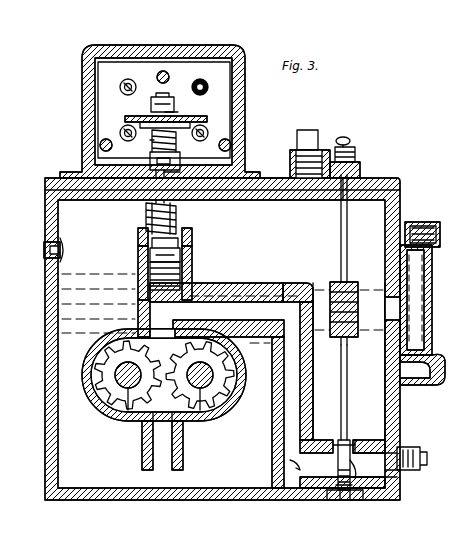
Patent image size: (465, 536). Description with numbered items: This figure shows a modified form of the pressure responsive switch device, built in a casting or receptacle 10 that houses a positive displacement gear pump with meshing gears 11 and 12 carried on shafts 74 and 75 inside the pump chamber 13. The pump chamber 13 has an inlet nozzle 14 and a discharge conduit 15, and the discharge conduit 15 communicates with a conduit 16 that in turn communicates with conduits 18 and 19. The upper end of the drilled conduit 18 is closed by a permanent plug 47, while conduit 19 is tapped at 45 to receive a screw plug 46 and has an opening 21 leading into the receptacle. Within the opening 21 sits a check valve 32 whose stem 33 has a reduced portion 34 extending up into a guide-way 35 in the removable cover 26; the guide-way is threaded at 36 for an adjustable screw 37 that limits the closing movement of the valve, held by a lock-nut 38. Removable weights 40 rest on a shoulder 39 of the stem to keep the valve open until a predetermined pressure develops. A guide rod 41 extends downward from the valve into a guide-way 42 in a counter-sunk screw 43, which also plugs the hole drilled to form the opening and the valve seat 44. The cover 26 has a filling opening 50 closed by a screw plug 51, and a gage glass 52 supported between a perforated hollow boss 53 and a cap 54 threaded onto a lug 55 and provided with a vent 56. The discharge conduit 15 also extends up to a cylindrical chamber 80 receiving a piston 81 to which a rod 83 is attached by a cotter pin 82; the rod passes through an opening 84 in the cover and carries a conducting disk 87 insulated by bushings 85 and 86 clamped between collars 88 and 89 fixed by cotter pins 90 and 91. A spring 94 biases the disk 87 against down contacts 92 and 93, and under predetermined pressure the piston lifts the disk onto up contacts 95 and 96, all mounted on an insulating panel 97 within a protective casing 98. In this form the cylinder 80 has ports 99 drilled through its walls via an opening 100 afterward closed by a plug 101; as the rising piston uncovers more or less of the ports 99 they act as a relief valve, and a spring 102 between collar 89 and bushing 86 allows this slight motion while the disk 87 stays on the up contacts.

The receptacle 10 is at (45, 400).
The pump gear 11 is at (236, 410).
The pump gear 12 is at (100, 400).
The pump chamber 13 is at (222, 425).
The inlet nozzle 14 is at (166, 470).
The discharge conduit 15 is at (150, 320).
The conduit 16 is at (247, 302).
The conduit 18 is at (284, 442).
The conduit 19 is at (322, 438).
The opening 21 is at (352, 457).
The cover 26 is at (262, 180).
The check valve 32 is at (338, 452).
The valve stem 33 is at (346, 405).
The reduced portion 34 is at (347, 256).
The guide-way 35 is at (343, 182).
The screw threads 36 is at (356, 176).
The adjustable screw 37 is at (350, 141).
The lock-nut 38 is at (356, 155).
The shoulder 39 is at (340, 338).
The removable weights 40 is at (352, 338).
The guide rod 41 is at (362, 470).
The guide-way 42 is at (348, 500).
The counter-sunk screw 43 is at (336, 500).
The valve seat 44 is at (358, 438).
The tapped portion 45 is at (398, 484).
The screw plug 46 is at (412, 455).
The permanent plug 47 is at (294, 286).
The filling opening 50 is at (308, 182).
The screw plug 51 is at (318, 128).
The gage glass 52 is at (432, 318).
The hollow boss 53 is at (440, 366).
The cap 54 is at (430, 224).
The lug 55 is at (440, 235).
The vent 56 is at (424, 230).
The shaft 74 is at (200, 416).
The shaft 75 is at (124, 416).
The cylindrical chamber 80 is at (140, 286).
The piston 81 is at (140, 272).
The cotter pin 82 is at (184, 271).
The rod 83 is at (148, 211).
The opening 84 is at (150, 168).
The insulating bushing 85 is at (180, 118).
The insulating bushing 86 is at (178, 138).
The conducting disk 87 is at (202, 122).
The collar 88 is at (172, 111).
The collar 89 is at (172, 161).
The cotter pin 90 is at (152, 105).
The cotter pin 91 is at (182, 176).
The down contact 92 is at (120, 135).
The down contact 93 is at (208, 134).
The spring 94 is at (178, 211).
The up contact 95 is at (120, 89).
The up contact 96 is at (208, 89).
The insulating panel 97 is at (150, 68).
The protective casing 98 is at (82, 118).
The ports 99 is at (140, 250).
The opening 100 is at (62, 250).
The plug 101 is at (46, 252).
The spring 102 is at (150, 142).